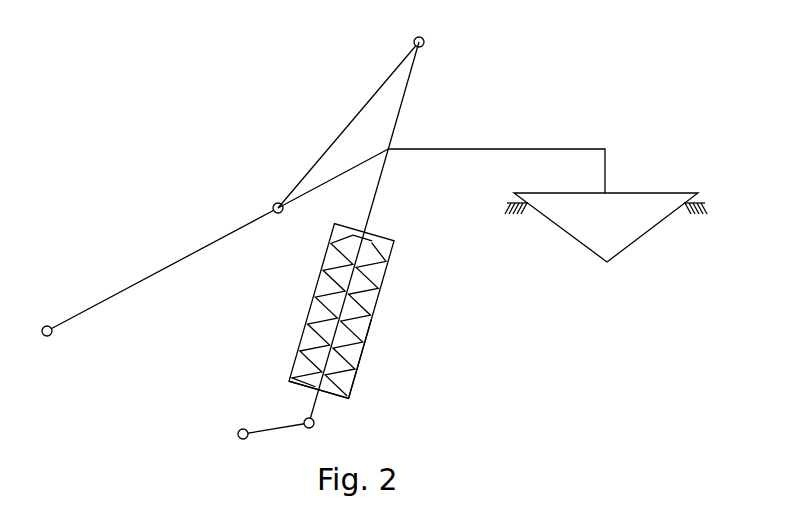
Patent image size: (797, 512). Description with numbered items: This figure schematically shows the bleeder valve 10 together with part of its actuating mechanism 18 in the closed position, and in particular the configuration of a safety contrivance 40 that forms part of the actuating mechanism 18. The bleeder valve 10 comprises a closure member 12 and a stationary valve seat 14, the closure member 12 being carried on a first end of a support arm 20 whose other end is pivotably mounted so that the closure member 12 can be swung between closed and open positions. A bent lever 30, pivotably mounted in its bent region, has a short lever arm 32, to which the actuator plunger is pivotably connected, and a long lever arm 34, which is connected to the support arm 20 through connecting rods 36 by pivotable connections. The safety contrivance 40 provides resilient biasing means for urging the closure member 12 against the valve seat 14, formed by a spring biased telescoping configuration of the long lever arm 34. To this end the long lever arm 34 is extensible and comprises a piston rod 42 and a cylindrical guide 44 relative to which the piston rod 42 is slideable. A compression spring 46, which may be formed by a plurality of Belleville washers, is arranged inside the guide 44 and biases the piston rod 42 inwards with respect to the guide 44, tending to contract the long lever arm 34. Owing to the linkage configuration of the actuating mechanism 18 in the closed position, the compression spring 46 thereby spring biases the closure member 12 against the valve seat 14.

The bleeder valve 10 is at (602, 80).
The closure member 12 is at (623, 231).
The stationary valve seat 14 is at (702, 204).
The actuating mechanism 18 is at (186, 140).
The support arm 20 is at (458, 149).
The bent lever 30 is at (360, 286).
The short lever arm 32 is at (270, 423).
The long lever arm 34 is at (414, 80).
The connecting rods 36 is at (355, 116).
The safety contrivance 40 is at (341, 311).
The piston rod 42 is at (373, 205).
The cylindrical guide 44 is at (330, 350).
The compression spring 46 is at (340, 313).